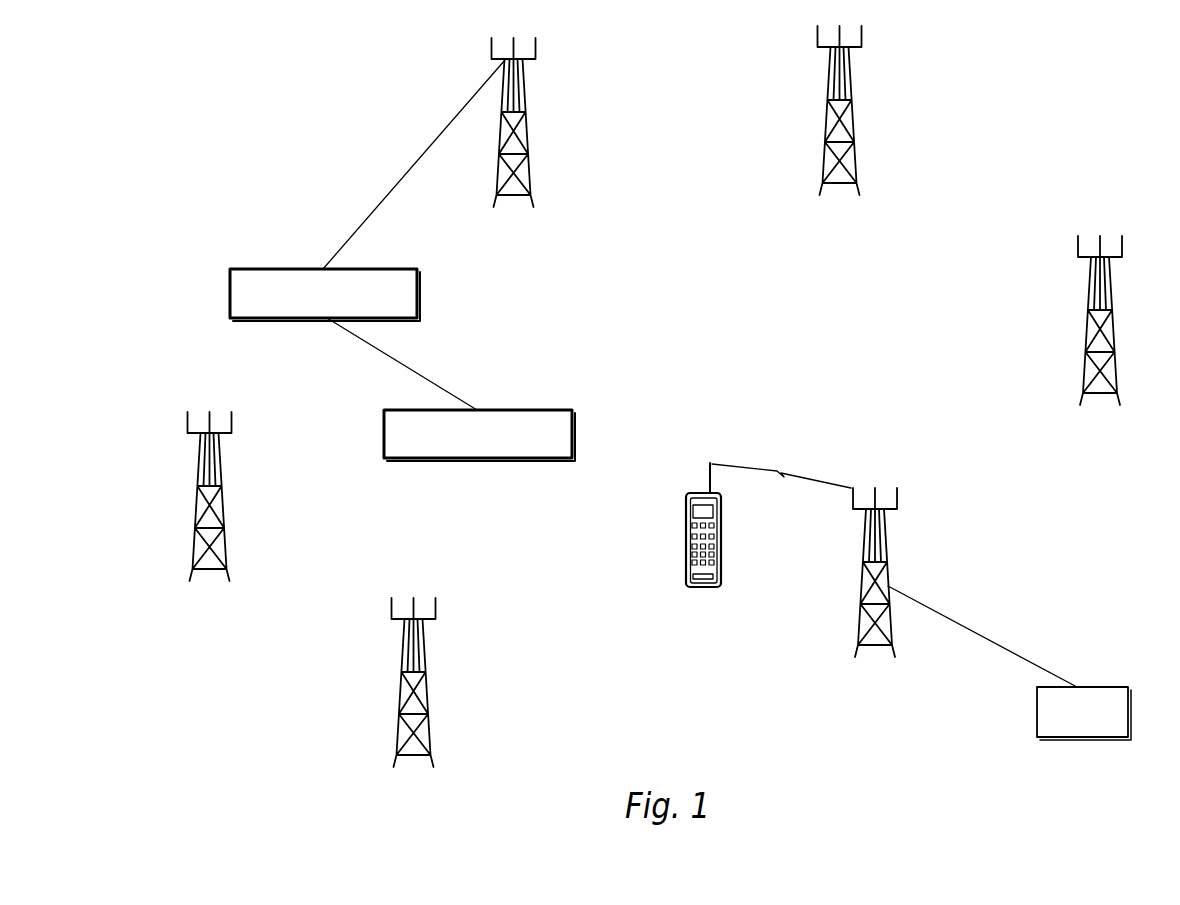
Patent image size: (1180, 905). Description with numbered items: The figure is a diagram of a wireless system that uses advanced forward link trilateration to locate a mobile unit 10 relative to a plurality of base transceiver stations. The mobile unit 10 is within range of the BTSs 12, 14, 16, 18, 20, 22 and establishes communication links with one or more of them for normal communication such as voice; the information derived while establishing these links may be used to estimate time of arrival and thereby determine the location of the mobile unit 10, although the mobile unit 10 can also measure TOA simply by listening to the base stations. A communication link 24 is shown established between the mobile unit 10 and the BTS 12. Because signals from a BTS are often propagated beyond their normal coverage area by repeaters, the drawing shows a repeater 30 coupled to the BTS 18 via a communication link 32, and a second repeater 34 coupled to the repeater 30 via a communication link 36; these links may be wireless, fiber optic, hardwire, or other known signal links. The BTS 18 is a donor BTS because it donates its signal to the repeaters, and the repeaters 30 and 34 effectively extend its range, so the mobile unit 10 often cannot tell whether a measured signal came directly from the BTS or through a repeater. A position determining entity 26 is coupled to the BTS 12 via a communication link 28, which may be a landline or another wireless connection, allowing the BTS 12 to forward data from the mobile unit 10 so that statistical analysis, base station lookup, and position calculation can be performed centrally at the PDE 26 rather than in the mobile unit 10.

The mobile unit 10 is at (686, 572).
The base transceiver station 12 is at (862, 588).
The base transceiver station 14 is at (1113, 333).
The base transceiver station 16 is at (853, 123).
The base transceiver station 18 is at (527, 133).
The base transceiver station 20 is at (221, 503).
The base transceiver station 22 is at (426, 690).
The communication link 24 is at (800, 470).
The position determining entity 26 is at (1093, 687).
The communication link 28 is at (973, 631).
The repeater 30 is at (372, 269).
The communication link 32 is at (406, 172).
The repeater 34 is at (524, 410).
The communication link 36 is at (413, 372).